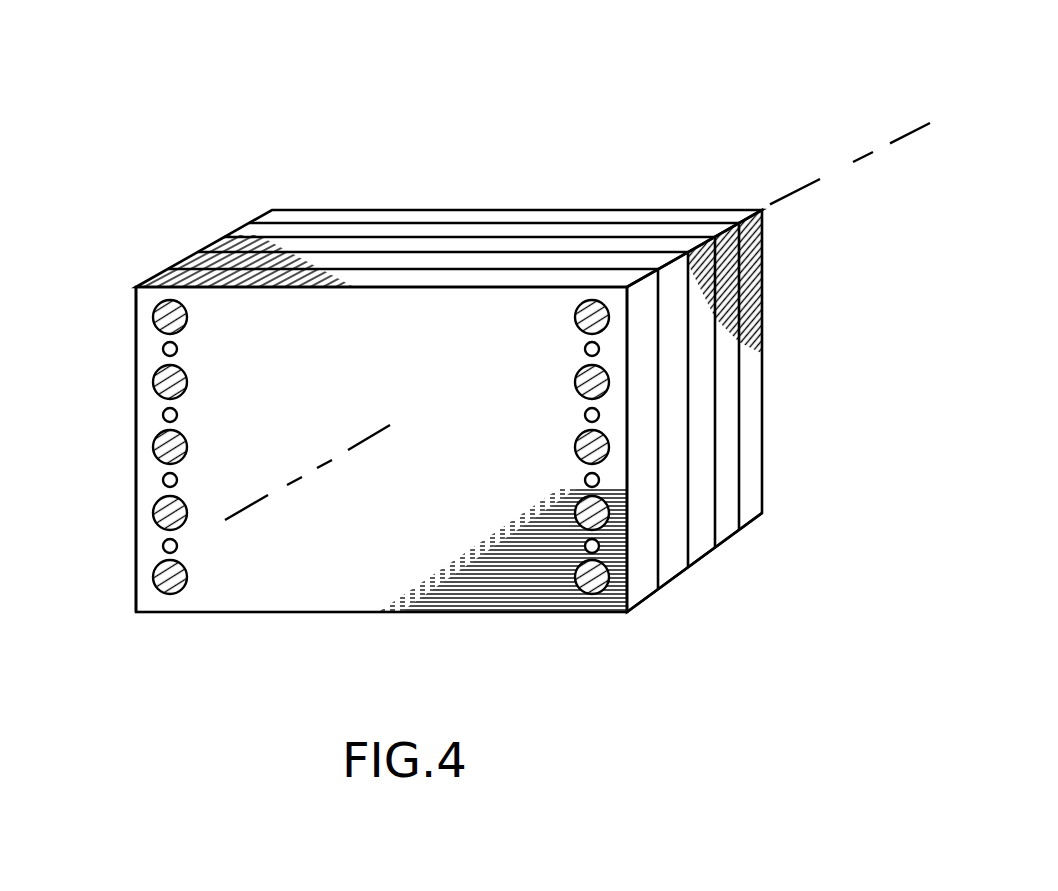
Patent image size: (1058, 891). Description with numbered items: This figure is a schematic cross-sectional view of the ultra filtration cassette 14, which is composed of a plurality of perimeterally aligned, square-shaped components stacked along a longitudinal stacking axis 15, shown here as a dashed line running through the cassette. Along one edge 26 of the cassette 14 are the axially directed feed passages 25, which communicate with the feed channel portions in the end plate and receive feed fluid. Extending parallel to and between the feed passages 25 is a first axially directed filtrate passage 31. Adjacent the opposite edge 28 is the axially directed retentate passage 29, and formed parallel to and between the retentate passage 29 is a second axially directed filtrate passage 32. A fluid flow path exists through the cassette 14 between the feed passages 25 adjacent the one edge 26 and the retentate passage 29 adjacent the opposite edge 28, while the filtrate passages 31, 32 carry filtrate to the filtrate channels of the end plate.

The ultra filtration cassette 14 is at (507, 167).
The longitudinal stacking axis 15 is at (830, 175).
The feed passage 25 is at (575, 317).
The edge 26 is at (625, 572).
The edge 28 is at (135, 303).
The retentate passage 29 is at (153, 318).
The first filtrate passage 31 is at (599, 546).
The second filtrate passage 32 is at (177, 546).